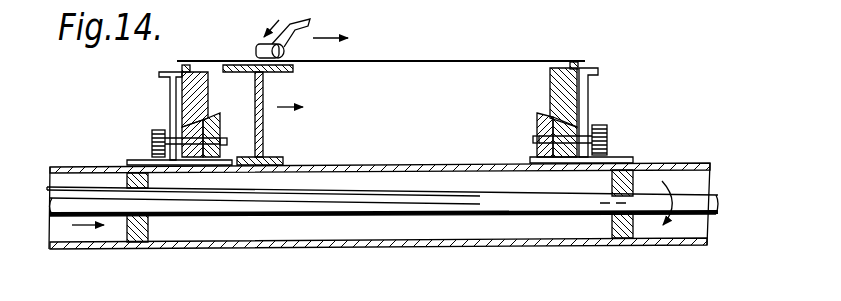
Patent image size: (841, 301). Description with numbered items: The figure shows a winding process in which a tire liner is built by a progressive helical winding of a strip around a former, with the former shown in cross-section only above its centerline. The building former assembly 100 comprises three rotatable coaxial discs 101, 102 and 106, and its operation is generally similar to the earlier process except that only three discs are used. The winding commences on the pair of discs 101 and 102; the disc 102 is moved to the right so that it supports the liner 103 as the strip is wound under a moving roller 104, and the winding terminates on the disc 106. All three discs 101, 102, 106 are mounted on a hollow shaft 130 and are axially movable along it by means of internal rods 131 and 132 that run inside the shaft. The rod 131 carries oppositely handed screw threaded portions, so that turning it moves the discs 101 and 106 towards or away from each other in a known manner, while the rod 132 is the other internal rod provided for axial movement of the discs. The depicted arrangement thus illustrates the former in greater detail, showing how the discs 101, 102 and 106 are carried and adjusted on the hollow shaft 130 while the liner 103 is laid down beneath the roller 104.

The building former assembly 100 is at (168, 255).
The rotatable disc 101 is at (183, 97).
The rotatable disc 102 is at (263, 93).
The liner 103 is at (203, 61).
The moving roller 104 is at (307, 20).
The rotatable disc 106 is at (570, 98).
The hollow shaft 130 is at (362, 246).
The internal rod 131 is at (441, 204).
The internal rod 132 is at (190, 190).